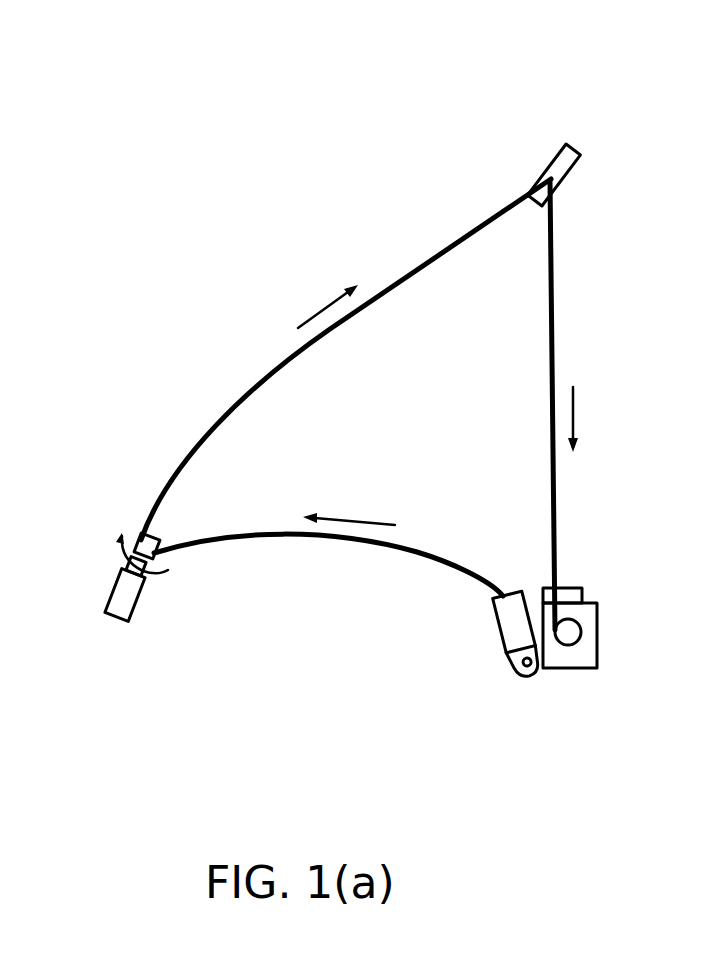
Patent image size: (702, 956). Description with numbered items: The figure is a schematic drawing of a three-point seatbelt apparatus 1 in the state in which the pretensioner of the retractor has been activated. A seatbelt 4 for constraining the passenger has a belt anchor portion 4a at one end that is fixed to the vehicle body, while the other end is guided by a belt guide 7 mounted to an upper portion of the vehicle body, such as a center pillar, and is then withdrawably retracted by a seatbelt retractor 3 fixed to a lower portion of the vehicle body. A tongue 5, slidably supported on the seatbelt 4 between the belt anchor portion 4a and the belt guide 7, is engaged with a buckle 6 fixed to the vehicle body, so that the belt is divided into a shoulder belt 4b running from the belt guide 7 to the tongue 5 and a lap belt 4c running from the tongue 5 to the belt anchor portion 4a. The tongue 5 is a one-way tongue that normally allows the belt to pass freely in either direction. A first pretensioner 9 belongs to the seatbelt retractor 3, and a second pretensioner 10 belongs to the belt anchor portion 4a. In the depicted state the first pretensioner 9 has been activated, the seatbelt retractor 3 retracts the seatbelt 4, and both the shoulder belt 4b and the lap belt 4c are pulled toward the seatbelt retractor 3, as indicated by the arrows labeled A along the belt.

The seatbelt apparatus 1 is at (432, 208).
The seatbelt retractor 3 is at (577, 660).
The seatbelt 4 is at (560, 339).
The belt anchor portion 4a is at (510, 658).
The shoulder belt 4b is at (267, 376).
The lap belt 4c is at (253, 538).
The tongue 5 is at (150, 535).
The buckle 6 is at (118, 608).
The belt guide 7 is at (578, 152).
The first pretensioner 9 is at (583, 592).
The second pretensioner 10 is at (500, 625).